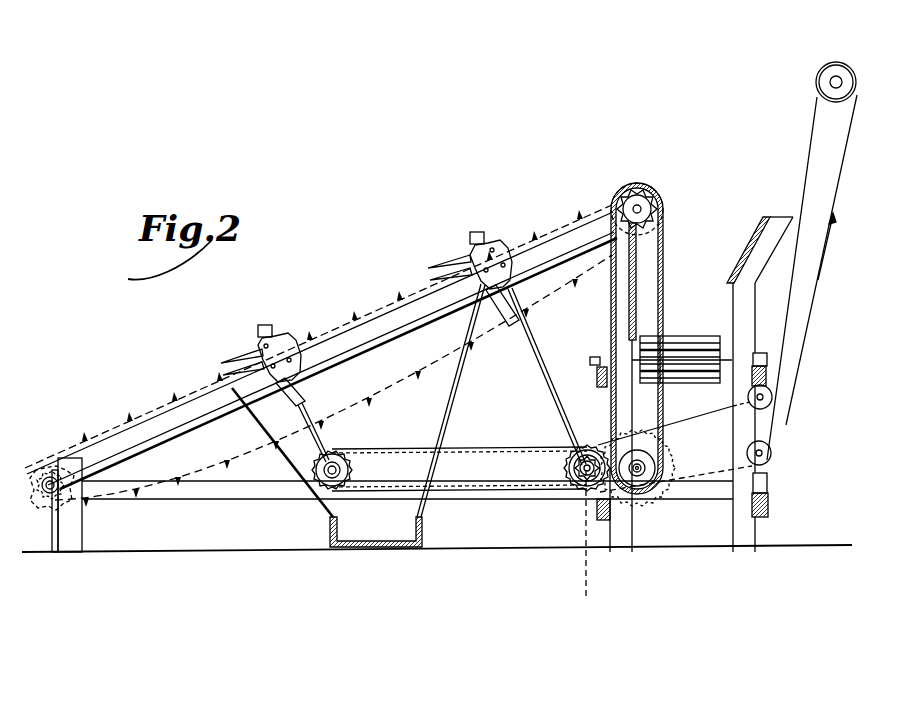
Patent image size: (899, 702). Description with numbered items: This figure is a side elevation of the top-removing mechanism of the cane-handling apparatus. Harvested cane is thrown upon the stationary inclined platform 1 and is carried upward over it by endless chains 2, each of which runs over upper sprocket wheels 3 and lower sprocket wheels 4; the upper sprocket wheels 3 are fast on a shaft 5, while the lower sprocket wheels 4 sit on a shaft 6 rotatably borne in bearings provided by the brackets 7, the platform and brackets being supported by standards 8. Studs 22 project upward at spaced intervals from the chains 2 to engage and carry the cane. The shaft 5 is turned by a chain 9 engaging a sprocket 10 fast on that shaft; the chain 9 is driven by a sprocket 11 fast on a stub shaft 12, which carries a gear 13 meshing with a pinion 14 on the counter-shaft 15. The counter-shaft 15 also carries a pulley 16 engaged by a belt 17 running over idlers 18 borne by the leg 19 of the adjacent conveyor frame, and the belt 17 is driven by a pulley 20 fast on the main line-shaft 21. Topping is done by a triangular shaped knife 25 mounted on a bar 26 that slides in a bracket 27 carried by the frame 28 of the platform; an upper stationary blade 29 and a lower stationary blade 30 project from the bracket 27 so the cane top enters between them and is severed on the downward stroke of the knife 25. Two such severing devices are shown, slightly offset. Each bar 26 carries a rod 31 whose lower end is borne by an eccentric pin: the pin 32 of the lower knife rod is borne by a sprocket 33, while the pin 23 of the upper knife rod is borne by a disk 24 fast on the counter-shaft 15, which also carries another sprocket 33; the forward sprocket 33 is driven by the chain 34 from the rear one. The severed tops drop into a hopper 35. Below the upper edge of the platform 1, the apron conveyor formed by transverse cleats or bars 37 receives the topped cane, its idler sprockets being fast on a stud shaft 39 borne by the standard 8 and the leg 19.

The inclined platform 1 is at (80, 442).
The endless chains 2 is at (163, 402).
The upper sprocket wheels 3 is at (660, 198).
The lower sprocket wheels 4 is at (44, 497).
The upper sprocket shaft 5 is at (646, 194).
The lower sprocket shaft 6 is at (47, 478).
The brackets 7 is at (55, 520).
The standards 8 is at (73, 540).
The chain 9 is at (665, 262).
The sprocket 10 is at (630, 192).
The sprocket 11 is at (648, 482).
The stub shaft 12 is at (642, 468).
The gear 13 is at (655, 492).
The pinion 14 is at (588, 549).
The counter-shaft 15 is at (585, 478).
The pulley 16 is at (574, 489).
The belt 17 is at (782, 422).
The idlers 18 is at (772, 393).
The leg 19 is at (748, 530).
The pulley 20 is at (815, 80).
The line-shaft 21 is at (834, 80).
The studs 22 is at (127, 415).
The eccentric pin 23 is at (585, 452).
The disk 24 is at (587, 471).
The triangular shaped knife 25 is at (268, 327).
The bar 26 is at (303, 395).
The bracket 27 is at (287, 331).
The frame 28 is at (416, 318).
The upper stationary blade 29 is at (243, 357).
The lower stationary blade 30 is at (247, 373).
The rod 31 is at (306, 416).
The eccentric pin 32 is at (341, 463).
The sprocket 33 is at (348, 470).
The chain 34 is at (470, 445).
The hopper 35 is at (357, 522).
The cleats or bars 37 is at (683, 338).
The stud shaft 39 is at (723, 382).